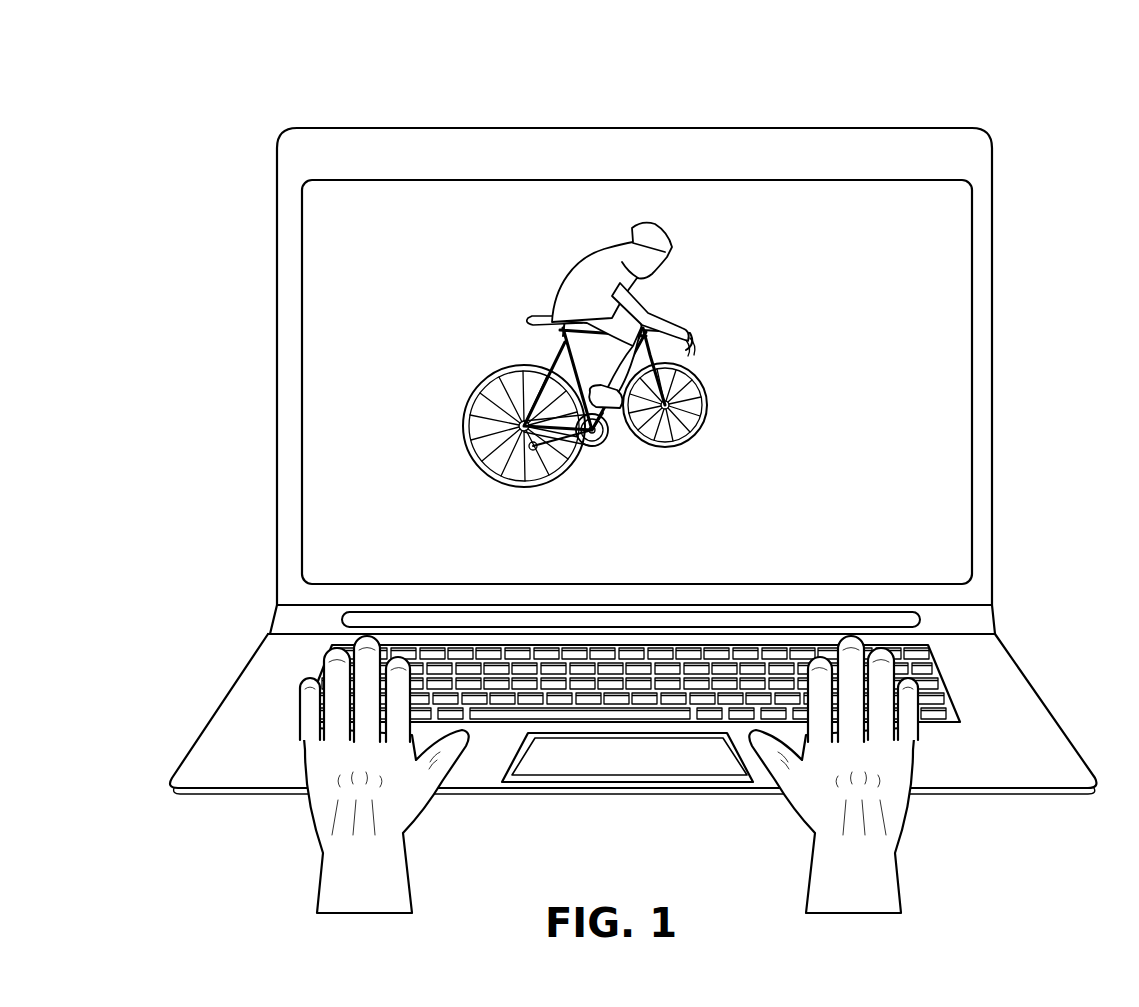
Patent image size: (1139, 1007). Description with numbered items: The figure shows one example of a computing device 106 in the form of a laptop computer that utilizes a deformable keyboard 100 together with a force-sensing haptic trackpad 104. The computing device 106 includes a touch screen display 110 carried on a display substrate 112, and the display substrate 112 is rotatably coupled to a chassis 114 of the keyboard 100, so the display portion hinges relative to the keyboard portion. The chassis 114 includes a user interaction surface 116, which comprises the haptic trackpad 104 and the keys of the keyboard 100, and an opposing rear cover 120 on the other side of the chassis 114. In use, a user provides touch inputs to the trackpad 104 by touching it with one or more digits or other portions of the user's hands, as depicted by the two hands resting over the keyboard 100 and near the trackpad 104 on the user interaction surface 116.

The deformable keyboard 100 is at (221, 666).
The force-sensing haptic trackpad 104 is at (658, 763).
The computing device 106 is at (181, 103).
The touch screen display 110 is at (897, 266).
The display substrate 112 is at (275, 245).
The chassis 114 is at (198, 733).
The user interaction surface 116 is at (1025, 736).
The rear cover 120 is at (1042, 793).